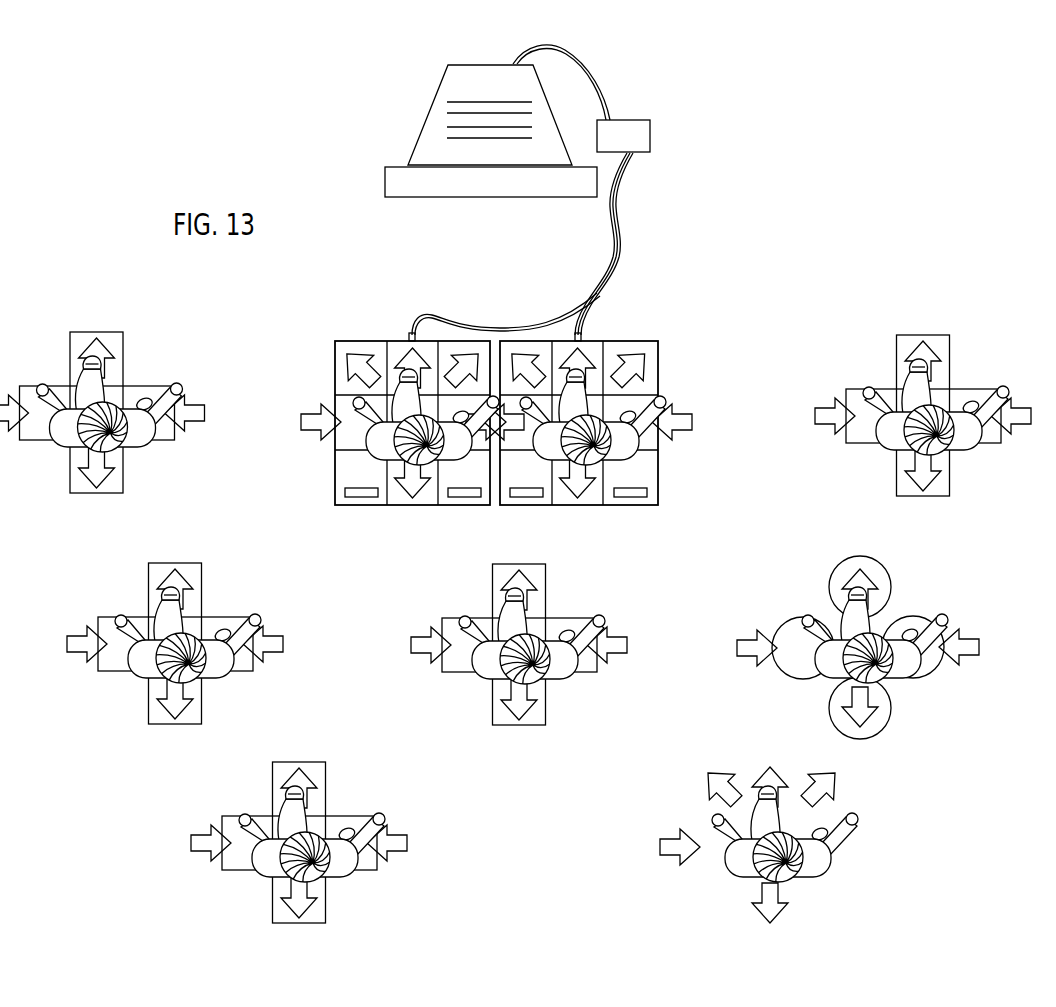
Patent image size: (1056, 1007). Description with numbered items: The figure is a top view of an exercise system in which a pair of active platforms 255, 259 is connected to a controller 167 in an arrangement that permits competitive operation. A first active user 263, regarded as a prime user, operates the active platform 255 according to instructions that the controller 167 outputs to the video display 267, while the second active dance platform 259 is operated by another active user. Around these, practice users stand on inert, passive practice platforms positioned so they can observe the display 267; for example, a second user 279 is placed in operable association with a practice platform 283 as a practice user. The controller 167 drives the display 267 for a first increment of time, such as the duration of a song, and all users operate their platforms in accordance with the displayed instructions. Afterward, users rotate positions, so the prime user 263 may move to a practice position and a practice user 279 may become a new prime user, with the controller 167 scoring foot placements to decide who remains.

The controller 167 is at (627, 133).
The video display 267 is at (467, 177).
The active platform 255 is at (532, 329).
The active dance platform 259 is at (372, 332).
The first active user 263 is at (650, 420).
The practice platform 283 is at (570, 612).
The second user 279 is at (563, 658).